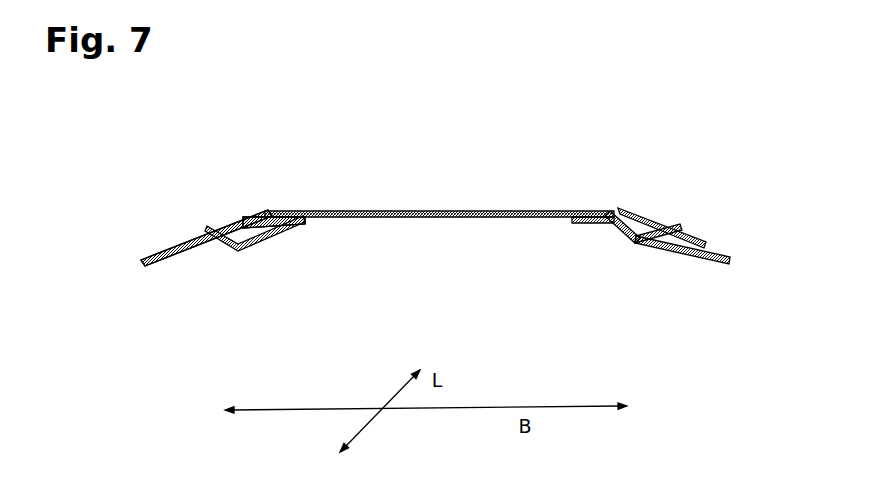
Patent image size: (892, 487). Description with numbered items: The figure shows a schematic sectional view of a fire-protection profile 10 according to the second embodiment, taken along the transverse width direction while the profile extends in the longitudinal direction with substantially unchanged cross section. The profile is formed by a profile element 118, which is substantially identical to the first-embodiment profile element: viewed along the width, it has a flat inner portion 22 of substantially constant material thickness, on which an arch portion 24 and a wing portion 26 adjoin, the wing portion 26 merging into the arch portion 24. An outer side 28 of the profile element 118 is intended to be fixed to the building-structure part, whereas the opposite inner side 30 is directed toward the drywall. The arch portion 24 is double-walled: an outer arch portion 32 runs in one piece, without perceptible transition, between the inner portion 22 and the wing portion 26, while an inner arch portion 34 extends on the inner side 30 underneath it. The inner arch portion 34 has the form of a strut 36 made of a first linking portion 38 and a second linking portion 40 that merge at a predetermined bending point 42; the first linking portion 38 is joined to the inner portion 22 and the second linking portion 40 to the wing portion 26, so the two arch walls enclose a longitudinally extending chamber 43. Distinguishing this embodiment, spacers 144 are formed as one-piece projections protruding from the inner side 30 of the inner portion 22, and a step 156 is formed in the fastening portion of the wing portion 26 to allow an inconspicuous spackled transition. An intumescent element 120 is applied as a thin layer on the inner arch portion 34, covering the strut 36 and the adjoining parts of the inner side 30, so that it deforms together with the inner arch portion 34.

The fire-protection profile 10 is at (510, 115).
The inner portion 22 is at (447, 210).
The arch portion 24 is at (207, 205).
The wing portion 26 is at (157, 257).
The outer side 28 is at (364, 190).
The inner side 30 is at (367, 224).
The outer arch portion 32 is at (615, 210).
The inner arch portion 34 is at (616, 248).
The strut 36 is at (616, 248).
The first linking portion 38 is at (613, 228).
The second linking portion 40 is at (650, 242).
The predetermined bending point 42 is at (630, 235).
The chamber 43 is at (646, 210).
The profile element 118 is at (217, 160).
The intumescent element 120 is at (260, 240).
The spacers 144 is at (304, 210).
The step 156 is at (167, 243).